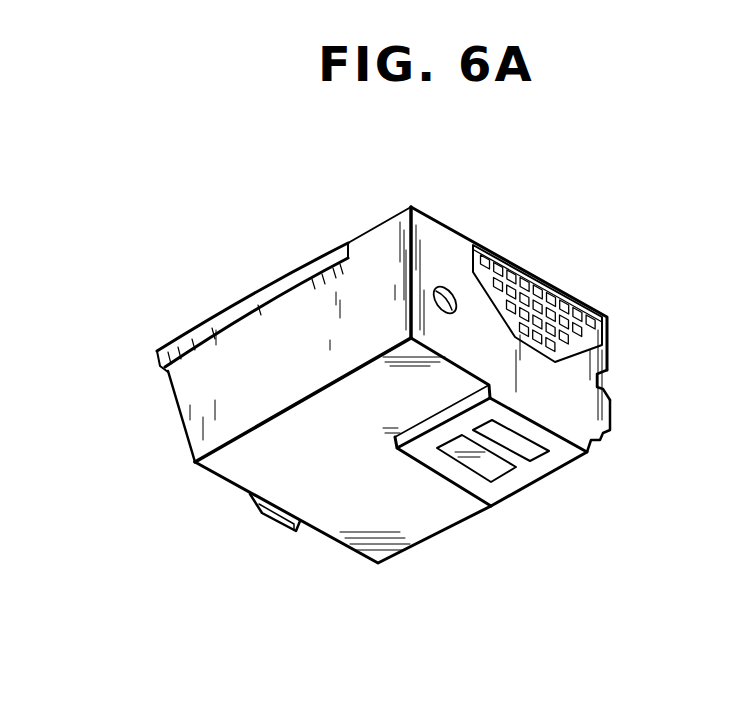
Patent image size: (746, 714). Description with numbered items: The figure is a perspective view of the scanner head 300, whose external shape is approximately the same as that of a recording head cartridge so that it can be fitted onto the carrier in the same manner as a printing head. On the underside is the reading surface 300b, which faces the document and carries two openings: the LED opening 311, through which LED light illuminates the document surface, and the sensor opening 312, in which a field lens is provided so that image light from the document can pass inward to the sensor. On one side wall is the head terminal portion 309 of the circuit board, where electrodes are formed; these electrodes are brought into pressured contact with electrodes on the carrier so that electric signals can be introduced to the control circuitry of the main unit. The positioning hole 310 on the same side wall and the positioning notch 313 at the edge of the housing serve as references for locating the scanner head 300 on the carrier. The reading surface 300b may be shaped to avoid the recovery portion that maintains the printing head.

The scanner head 300 is at (348, 243).
The reading surface 300b is at (417, 456).
The head terminal portion 309 is at (548, 288).
The positioning hole 310 is at (441, 285).
The LED opening 311 is at (478, 472).
The sensor opening 312 is at (543, 457).
The positioning notch 313 is at (605, 388).